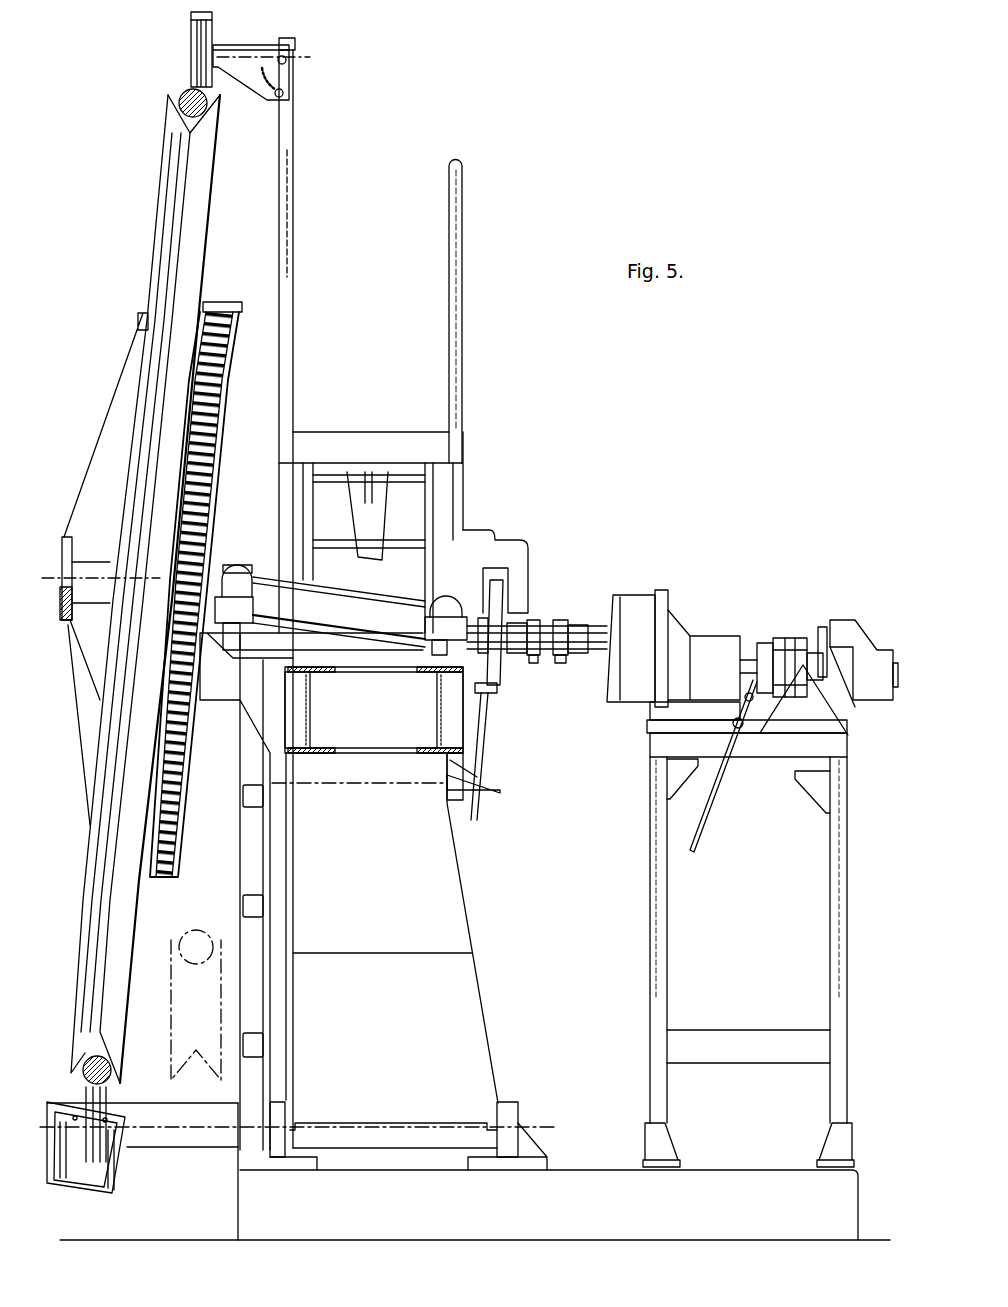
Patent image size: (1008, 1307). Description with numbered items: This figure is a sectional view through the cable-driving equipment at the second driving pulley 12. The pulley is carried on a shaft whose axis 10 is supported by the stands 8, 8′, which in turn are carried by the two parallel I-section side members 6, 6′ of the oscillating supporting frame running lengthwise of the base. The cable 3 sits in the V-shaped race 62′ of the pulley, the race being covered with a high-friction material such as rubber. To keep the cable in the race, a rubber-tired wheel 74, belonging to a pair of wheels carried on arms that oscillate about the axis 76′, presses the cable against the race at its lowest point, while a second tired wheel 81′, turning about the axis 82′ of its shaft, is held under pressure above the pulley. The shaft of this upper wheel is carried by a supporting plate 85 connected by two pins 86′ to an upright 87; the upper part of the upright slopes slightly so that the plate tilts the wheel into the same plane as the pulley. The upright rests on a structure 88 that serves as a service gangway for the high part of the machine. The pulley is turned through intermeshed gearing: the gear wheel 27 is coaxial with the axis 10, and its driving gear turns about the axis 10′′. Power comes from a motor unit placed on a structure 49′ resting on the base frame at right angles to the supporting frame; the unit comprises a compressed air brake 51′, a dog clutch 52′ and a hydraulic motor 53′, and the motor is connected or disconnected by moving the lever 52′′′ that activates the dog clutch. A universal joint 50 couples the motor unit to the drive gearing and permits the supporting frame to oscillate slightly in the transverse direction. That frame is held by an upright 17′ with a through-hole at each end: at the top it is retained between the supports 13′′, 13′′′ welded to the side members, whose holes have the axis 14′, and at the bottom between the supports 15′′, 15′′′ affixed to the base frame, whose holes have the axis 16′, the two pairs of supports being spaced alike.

The cable 3 is at (187, 92).
The side member 6 is at (437, 705).
The side member 6′ is at (312, 708).
The stand 8 is at (397, 600).
The stand 8′ is at (260, 572).
The axis 10 is at (58, 572).
The axis 10′′ is at (333, 612).
The second driving pulley 12 is at (95, 828).
The support 13′′ is at (463, 800).
The support 13′′′ is at (277, 798).
The axis 14′ is at (363, 785).
The support 15′′ is at (503, 1143).
The support 15′′′ is at (280, 1110).
The axis 16′ is at (390, 1127).
The upright 17′ is at (445, 953).
The gear wheel 27 is at (208, 565).
The structure 49′ is at (760, 763).
The universal joint 50 is at (562, 620).
The compressed air brake 51′ is at (627, 603).
The dog clutch 52′ is at (777, 640).
The lever 52′′′ is at (693, 853).
The hydraulic motor 53′ is at (870, 653).
The race 62′ is at (187, 116).
The wheel 74 is at (80, 1092).
The axis 76′ is at (125, 1160).
The wheel 81′ is at (213, 17).
The axis 82′ is at (187, 50).
The support 85 is at (270, 74).
The pins 86′ is at (286, 57).
The upright 87 is at (290, 190).
The structure 88 is at (367, 442).